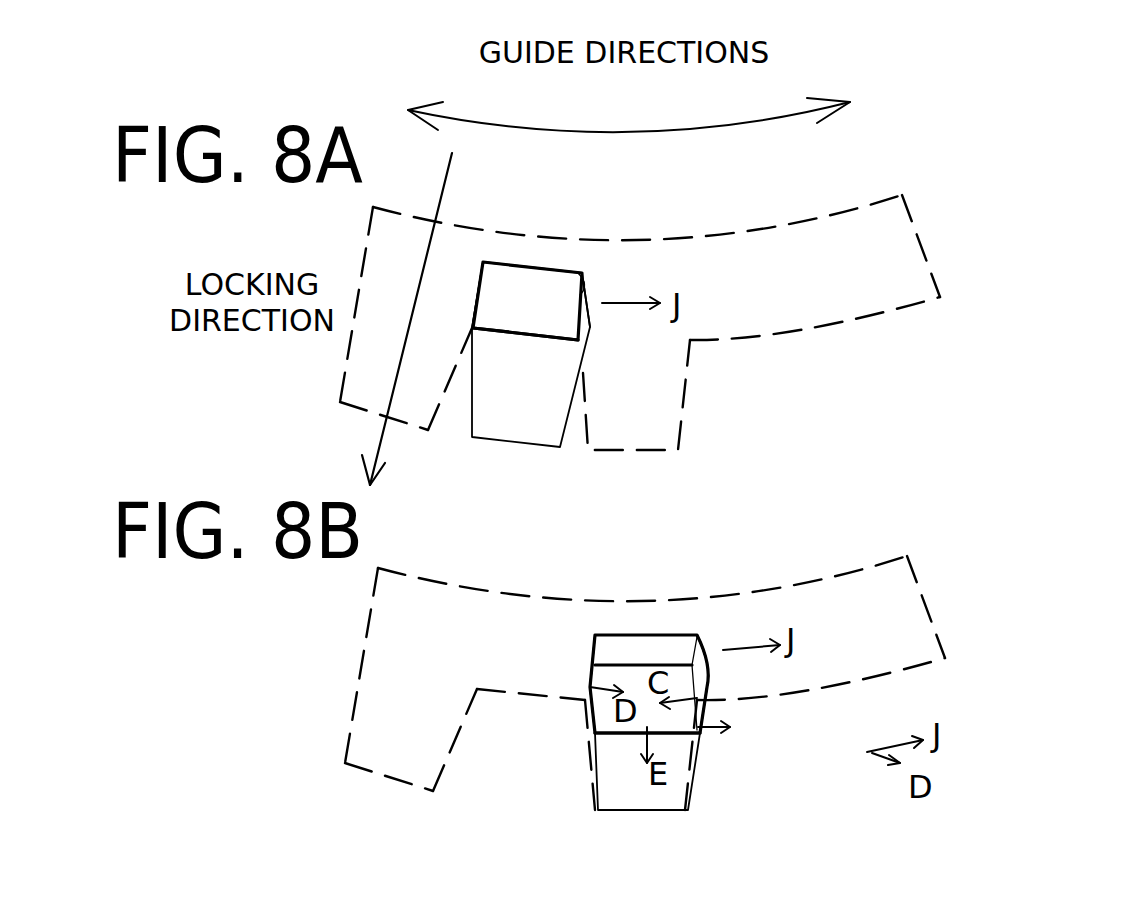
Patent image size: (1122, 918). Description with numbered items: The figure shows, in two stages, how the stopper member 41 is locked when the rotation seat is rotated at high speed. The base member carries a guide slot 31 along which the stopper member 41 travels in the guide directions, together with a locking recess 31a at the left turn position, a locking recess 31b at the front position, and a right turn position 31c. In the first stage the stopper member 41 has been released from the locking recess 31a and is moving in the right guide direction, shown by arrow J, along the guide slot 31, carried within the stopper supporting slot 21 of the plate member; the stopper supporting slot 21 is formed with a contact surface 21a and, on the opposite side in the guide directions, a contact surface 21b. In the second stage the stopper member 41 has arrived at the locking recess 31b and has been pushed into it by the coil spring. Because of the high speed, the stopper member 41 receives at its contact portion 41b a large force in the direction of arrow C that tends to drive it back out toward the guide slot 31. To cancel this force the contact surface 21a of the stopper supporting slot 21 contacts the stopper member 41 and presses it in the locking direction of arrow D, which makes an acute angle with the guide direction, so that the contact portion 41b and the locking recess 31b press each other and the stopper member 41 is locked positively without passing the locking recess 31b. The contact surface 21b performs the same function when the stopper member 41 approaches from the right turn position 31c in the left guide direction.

In FIG. 8A, the stopper supporting slot 21 is at (500, 445).
In FIG. 8B, the stopper supporting slot 21 is at (602, 760).
In FIG. 8A, the contact surface 21a is at (477, 290).
In FIG. 8B, the contact surface 21a is at (592, 672).
In FIG. 8A, the contact surface 21b is at (580, 275).
In FIG. 8B, the contact surface 21b is at (693, 634).
In FIG. 8A, the guide slot 31 is at (867, 267).
In FIG. 8B, the guide slot 31 is at (868, 623).
In FIG. 8A, the locking recess 31a is at (410, 420).
In FIG. 8B, the locking recess 31a is at (412, 778).
In FIG. 8A, the locking recess 31b is at (607, 450).
In FIG. 8B, the locking recess 31b is at (607, 810).
In FIG. 8A, the right turn position of locking recess 31c is at (768, 334).
In FIG. 8B, the right turn position of locking recess 31c is at (771, 696).
In FIG. 8A, the stopper member 41 is at (522, 298).
In FIG. 8B, the stopper member 41 is at (638, 673).
In FIG. 8A, the contact portion 41b is at (578, 342).
In FIG. 8B, the contact portion 41b is at (698, 728).